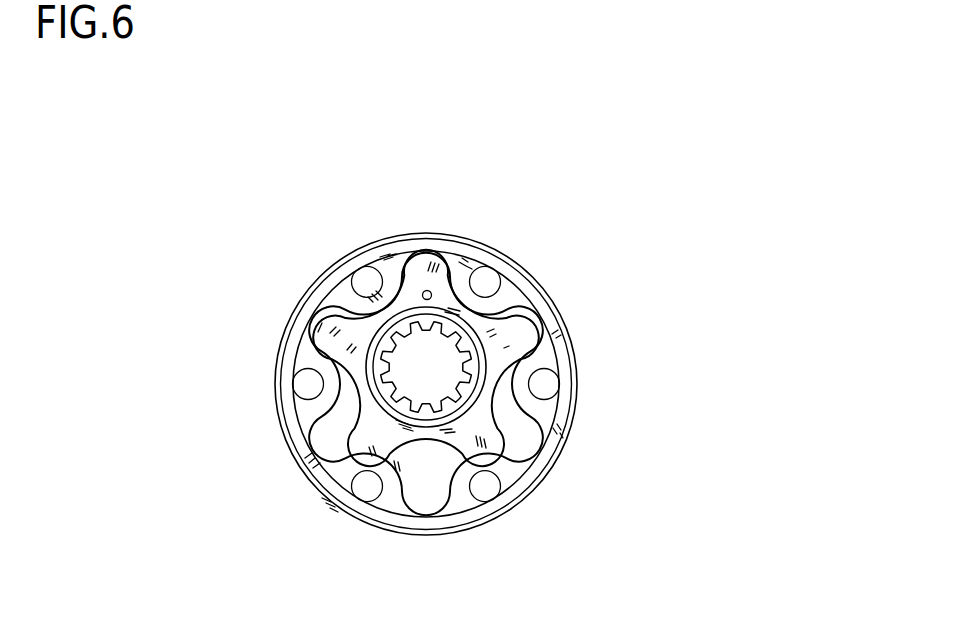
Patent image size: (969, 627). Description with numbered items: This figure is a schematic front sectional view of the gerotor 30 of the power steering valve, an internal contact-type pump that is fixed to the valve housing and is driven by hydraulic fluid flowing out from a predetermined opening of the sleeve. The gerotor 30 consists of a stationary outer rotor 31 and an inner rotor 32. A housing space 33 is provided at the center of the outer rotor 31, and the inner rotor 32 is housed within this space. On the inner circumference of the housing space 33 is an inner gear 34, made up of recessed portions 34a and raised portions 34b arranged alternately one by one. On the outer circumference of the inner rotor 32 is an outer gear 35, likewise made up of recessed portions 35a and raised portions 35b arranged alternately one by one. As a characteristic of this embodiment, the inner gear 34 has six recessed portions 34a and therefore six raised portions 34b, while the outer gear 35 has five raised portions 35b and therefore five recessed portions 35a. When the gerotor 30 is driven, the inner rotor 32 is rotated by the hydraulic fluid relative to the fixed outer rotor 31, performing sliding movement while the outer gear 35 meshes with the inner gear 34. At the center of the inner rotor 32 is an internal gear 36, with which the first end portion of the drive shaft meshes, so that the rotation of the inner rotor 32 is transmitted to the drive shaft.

The gerotor 30 is at (551, 204).
The outer rotor 31 is at (547, 359).
The inner rotor 32 is at (508, 338).
The housing space 33 is at (428, 258).
The inner gear 34 is at (225, 218).
The recessed portions 34a is at (322, 322).
The raised portions 34b is at (353, 300).
The outer gear 35 is at (593, 490).
The recessed portions 35a is at (427, 450).
The raised portions 35b is at (480, 440).
The internal gear 36 is at (428, 328).